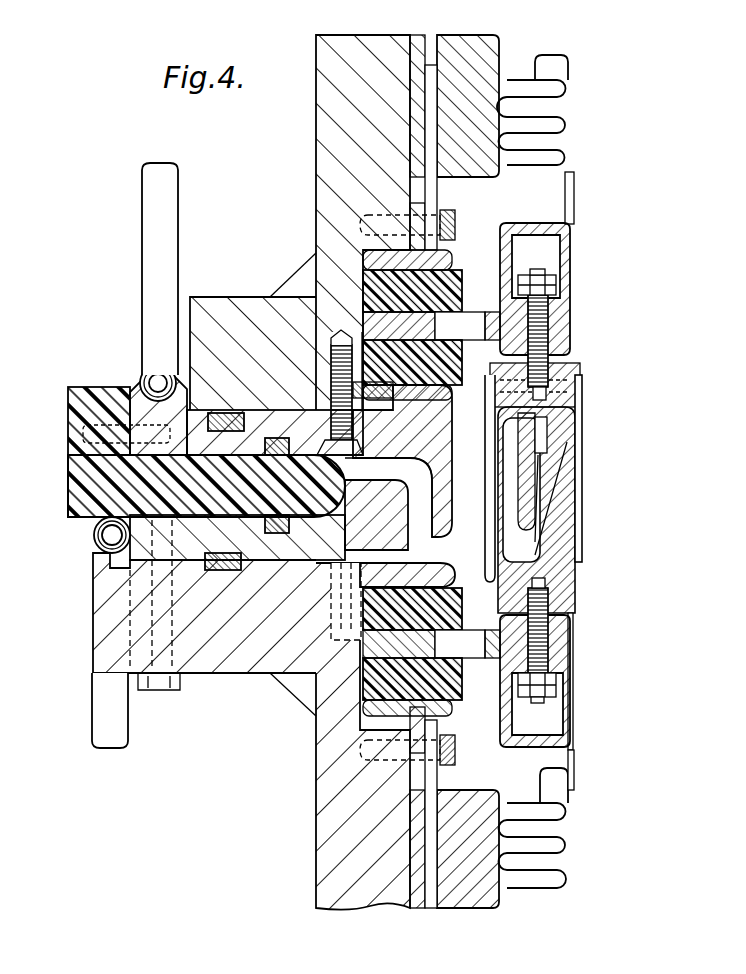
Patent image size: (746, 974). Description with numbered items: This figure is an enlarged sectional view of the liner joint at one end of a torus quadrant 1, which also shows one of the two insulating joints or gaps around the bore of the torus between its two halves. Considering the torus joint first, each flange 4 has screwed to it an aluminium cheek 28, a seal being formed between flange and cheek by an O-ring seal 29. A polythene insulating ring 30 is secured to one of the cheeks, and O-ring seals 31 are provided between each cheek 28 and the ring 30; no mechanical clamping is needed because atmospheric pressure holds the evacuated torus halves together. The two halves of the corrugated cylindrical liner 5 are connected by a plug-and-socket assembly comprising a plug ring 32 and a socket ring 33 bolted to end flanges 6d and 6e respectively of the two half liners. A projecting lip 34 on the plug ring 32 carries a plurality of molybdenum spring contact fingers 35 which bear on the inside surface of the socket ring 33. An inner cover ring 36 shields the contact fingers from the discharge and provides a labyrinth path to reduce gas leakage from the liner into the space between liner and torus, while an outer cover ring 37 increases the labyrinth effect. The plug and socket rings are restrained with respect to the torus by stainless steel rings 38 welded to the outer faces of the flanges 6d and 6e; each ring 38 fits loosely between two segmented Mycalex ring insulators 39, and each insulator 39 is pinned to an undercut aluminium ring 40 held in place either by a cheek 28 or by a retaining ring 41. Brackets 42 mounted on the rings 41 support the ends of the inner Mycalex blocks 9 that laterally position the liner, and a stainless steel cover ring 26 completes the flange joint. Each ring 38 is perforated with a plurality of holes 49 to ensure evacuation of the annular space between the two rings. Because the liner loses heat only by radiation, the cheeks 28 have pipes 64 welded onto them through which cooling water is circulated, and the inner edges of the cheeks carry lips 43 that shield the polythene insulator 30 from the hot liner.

The torus quadrant 1 is at (349, 101).
The flange 4 is at (248, 305).
The cylindrical liner 5 is at (567, 75).
The inner blocks 9 is at (466, 78).
The cover ring 26 is at (568, 256).
The cheek 28 is at (136, 382).
The O-ring seal 29 is at (226, 414).
The insulating ring 30 is at (103, 520).
The O-ring seals 31 is at (340, 472).
The plug ring 32 is at (362, 393).
The socket ring 33 is at (568, 602).
The projecting lip 34 is at (487, 468).
The spring contact fingers 35 is at (545, 487).
The inner cover ring 36 is at (580, 500).
The outer cover ring 37 is at (505, 490).
The stainless steel rings 38 is at (410, 326).
The segmented Mycalex ring insulators 39 is at (453, 262).
The undercut aluminium ring 40 is at (360, 250).
The retaining ring 41 is at (448, 236).
The brackets 42 is at (432, 183).
The lips 43 is at (455, 525).
The holes 49 is at (462, 314).
The end flange 6d is at (460, 352).
The end flange 6e is at (562, 620).
The pipes 64 is at (165, 238).